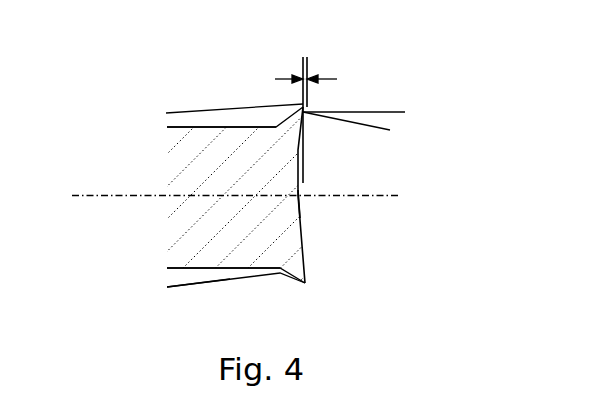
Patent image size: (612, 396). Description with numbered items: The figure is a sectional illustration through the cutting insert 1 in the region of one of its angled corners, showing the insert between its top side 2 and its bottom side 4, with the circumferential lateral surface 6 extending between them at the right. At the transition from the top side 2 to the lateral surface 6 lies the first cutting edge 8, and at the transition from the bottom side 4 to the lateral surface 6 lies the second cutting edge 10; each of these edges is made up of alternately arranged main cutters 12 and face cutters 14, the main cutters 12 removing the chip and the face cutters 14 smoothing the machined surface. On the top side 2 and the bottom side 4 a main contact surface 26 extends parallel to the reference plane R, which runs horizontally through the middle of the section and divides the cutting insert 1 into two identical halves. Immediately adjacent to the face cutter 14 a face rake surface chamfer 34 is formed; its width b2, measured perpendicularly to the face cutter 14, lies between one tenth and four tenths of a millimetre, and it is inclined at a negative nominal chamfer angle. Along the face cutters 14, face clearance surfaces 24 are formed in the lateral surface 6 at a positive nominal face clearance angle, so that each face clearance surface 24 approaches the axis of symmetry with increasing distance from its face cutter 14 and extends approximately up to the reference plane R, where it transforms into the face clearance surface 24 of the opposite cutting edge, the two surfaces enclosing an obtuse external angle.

The cutting insert 1 is at (94, 121).
The top side 2 is at (208, 112).
The bottom side 4 is at (187, 282).
The circumferential lateral surface 6 is at (306, 227).
The first cutting edge 8 is at (223, 122).
The second cutting edge 10 is at (220, 280).
The main cutter 12 is at (193, 113).
The face cutter 14 is at (305, 107).
The face clearance surface 24 is at (299, 193).
The main contact surface 26 is at (185, 128).
The face rake surface chamfer 34 is at (305, 108).
The width of the face rake surface chamfer b2 is at (301, 70).
The reference plane R is at (120, 194).